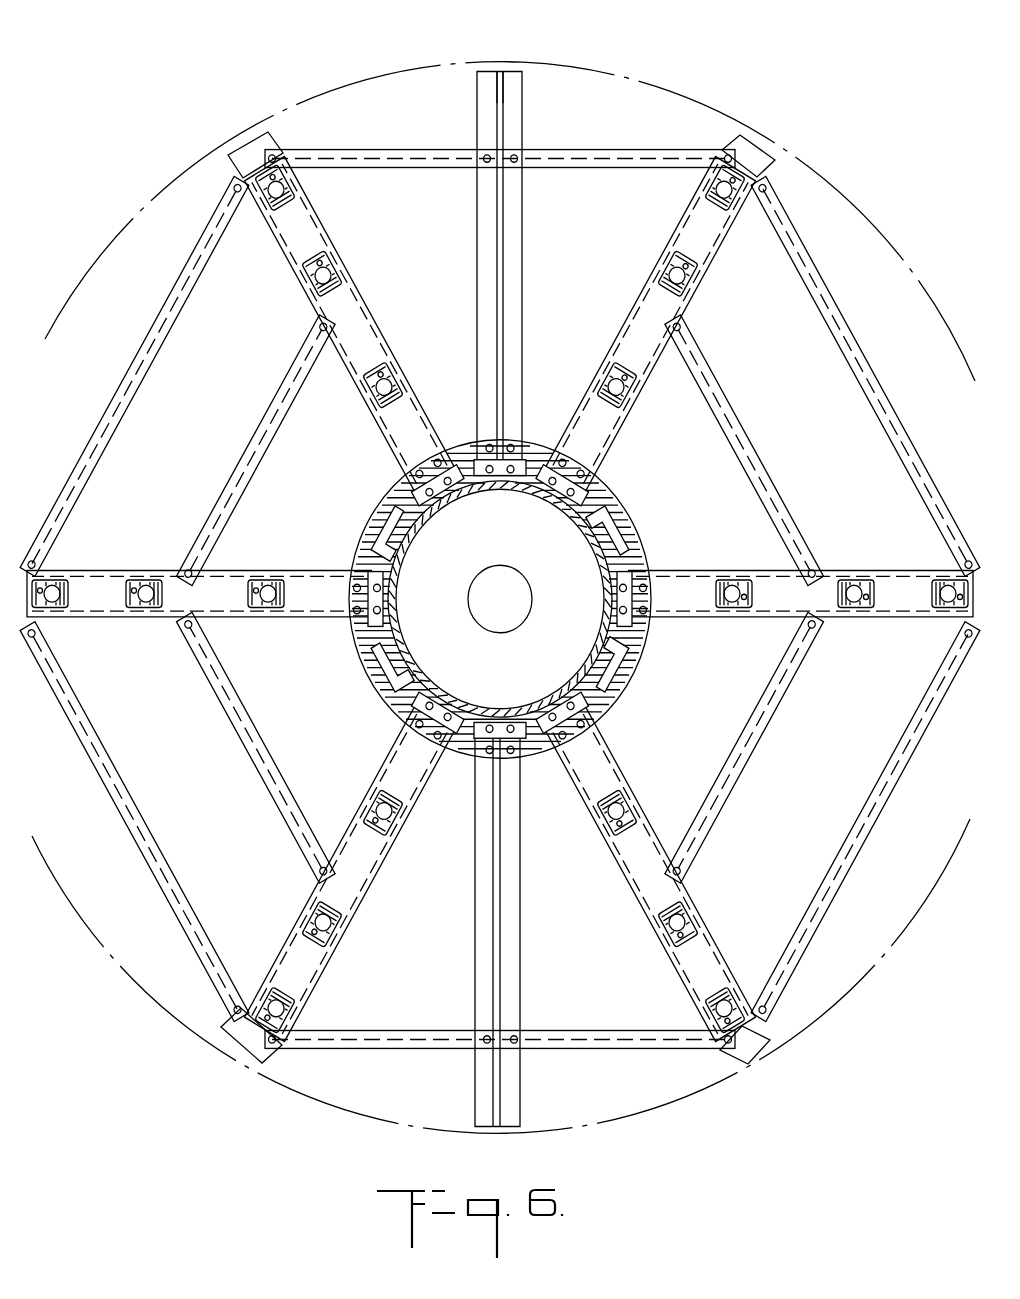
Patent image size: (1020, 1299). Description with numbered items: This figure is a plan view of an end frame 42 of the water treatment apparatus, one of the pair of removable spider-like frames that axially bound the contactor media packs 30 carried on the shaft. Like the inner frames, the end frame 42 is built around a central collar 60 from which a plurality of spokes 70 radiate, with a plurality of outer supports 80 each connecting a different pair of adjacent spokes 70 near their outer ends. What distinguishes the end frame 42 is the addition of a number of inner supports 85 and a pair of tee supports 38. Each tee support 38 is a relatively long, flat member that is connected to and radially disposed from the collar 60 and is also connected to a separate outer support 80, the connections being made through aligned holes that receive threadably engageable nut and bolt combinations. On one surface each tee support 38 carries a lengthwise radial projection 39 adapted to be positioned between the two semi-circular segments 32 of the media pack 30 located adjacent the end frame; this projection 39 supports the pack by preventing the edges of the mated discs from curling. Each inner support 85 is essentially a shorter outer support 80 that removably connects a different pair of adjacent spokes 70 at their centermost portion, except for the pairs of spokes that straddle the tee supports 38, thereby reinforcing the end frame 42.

The media pack 30 is at (410, 22).
The semi-circular segment 32 is at (300, 112).
The tee support 38 is at (518, 300).
The radial projection 39 is at (508, 74).
The end frame 42 is at (500, 569).
The collar 60 is at (626, 510).
The spoke 70 is at (722, 230).
The outer support 80 is at (660, 153).
The inner support 85 is at (815, 560).